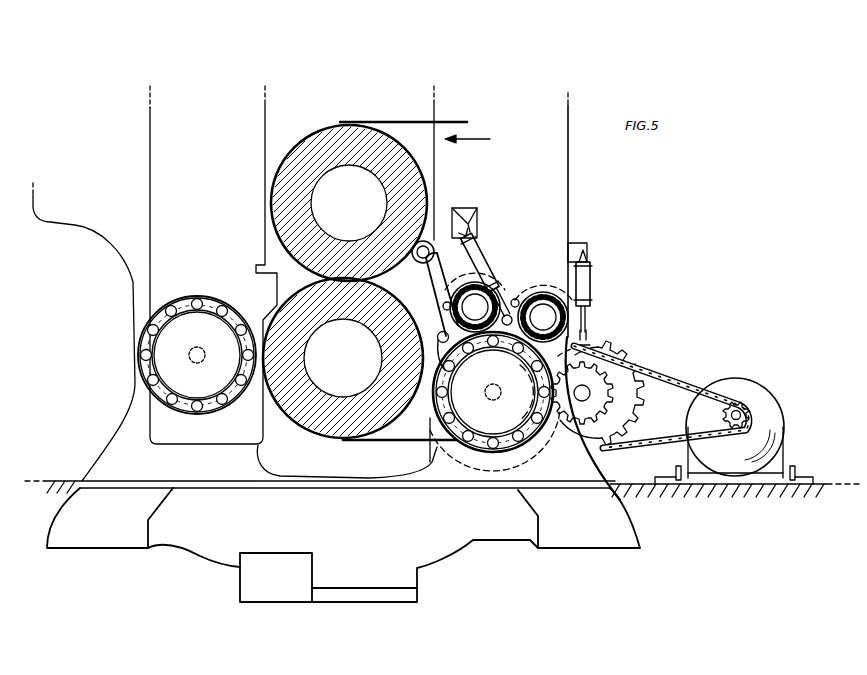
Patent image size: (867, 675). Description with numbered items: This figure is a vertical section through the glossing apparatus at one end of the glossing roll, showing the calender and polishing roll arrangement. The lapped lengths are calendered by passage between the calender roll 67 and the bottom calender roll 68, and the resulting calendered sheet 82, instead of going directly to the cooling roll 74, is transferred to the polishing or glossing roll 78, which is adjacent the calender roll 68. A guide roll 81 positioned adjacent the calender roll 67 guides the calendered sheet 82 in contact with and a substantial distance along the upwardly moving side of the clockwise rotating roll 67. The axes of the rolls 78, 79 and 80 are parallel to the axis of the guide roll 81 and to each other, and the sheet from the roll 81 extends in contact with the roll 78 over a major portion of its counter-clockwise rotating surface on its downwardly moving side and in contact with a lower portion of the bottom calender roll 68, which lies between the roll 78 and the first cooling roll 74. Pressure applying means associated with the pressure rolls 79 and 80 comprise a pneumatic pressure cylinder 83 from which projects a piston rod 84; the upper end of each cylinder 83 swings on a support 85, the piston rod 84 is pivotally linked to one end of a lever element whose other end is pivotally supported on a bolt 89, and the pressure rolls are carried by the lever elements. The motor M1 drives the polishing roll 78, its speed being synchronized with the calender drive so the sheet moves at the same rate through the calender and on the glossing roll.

The calender roll 67 is at (349, 124).
The bottom calender roll 68 is at (306, 420).
The cooling roll 74 is at (207, 325).
The polishing or glossing roll 78 is at (522, 432).
The pressure roll 79 is at (490, 293).
The pressure roll 80 is at (541, 300).
The guide roll 81 is at (433, 240).
The calendered sheet 82 is at (423, 264).
The pneumatic pressure cylinder 83 is at (489, 250).
The piston rod 84 is at (590, 331).
The support 85 is at (480, 220).
The bolt 89 is at (447, 302).
The motor M1 is at (770, 405).